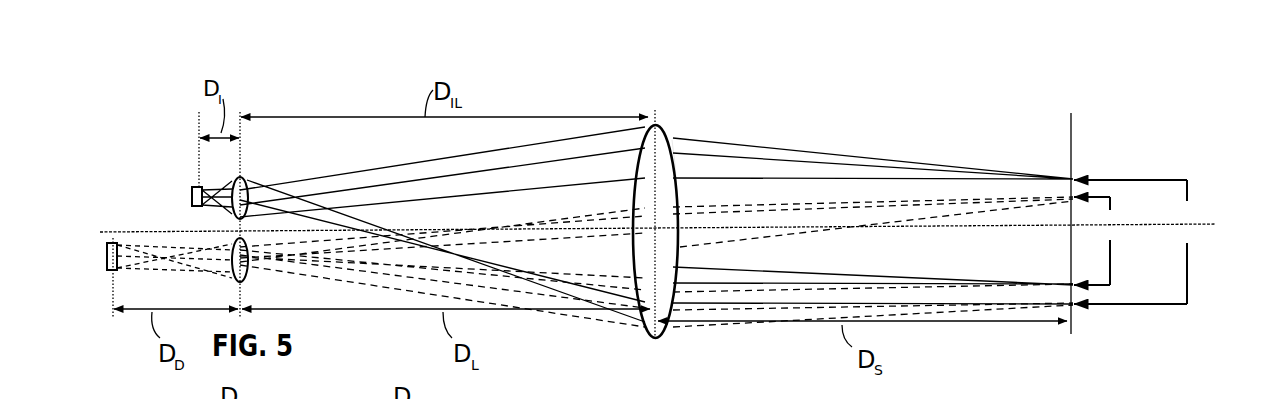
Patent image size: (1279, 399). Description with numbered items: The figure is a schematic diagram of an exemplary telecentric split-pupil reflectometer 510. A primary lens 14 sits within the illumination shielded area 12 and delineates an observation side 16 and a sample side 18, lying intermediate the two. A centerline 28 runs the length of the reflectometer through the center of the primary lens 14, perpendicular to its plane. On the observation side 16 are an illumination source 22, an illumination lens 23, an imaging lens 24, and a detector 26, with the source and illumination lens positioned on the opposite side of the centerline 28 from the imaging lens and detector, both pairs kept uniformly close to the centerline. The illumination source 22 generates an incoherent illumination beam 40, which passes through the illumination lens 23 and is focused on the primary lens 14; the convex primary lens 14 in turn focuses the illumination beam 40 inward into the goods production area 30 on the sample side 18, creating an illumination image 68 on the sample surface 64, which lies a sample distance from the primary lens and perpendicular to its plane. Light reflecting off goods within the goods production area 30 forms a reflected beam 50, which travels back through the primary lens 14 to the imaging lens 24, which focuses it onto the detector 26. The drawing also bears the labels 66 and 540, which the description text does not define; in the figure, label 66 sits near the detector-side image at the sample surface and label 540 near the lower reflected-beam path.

The illumination shielded area 12 is at (798, 97).
The primary lens 14 is at (674, 146).
The observation side 16 is at (597, 96).
The sample side 18 is at (695, 97).
The illumination source 22 is at (197, 186).
The illumination lens 23 is at (244, 176).
The imaging lens 24 is at (234, 262).
The detector 26 is at (111, 240).
The centerline 28 is at (947, 228).
The goods production area 30 is at (1060, 234).
The illumination beam 40 is at (303, 200).
The reflected beam 50 is at (340, 263).
The sample surface 64 is at (1073, 150).
The detector image 66 is at (1112, 257).
The illumination image 68 is at (1188, 254).
The telecentric split-pupil reflectometer 510 is at (358, 84).
The detection path 540 is at (1062, 248).